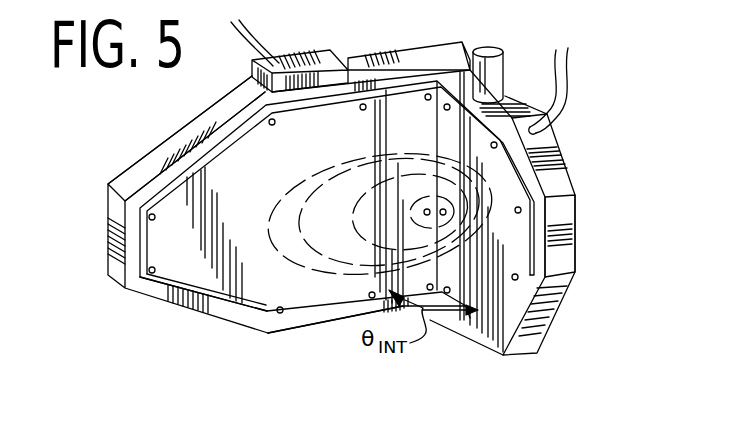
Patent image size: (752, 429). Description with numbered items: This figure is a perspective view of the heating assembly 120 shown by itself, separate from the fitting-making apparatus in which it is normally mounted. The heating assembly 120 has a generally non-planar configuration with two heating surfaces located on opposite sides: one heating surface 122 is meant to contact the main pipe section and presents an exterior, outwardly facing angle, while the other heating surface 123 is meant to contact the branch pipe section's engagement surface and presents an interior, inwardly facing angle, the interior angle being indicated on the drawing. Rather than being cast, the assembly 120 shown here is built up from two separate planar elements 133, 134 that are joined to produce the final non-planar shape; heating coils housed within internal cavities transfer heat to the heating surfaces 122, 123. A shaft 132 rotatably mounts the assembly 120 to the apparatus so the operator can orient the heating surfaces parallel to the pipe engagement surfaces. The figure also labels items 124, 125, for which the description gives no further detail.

The heating assembly 120 is at (572, 167).
The heating surface 122 is at (362, 58).
The heating surface 123 is at (270, 290).
The cable 124 is at (552, 49).
The bottom wall 125 is at (300, 323).
The shaft 132 is at (492, 72).
The planar element 133 is at (570, 216).
The planar element 134 is at (155, 163).